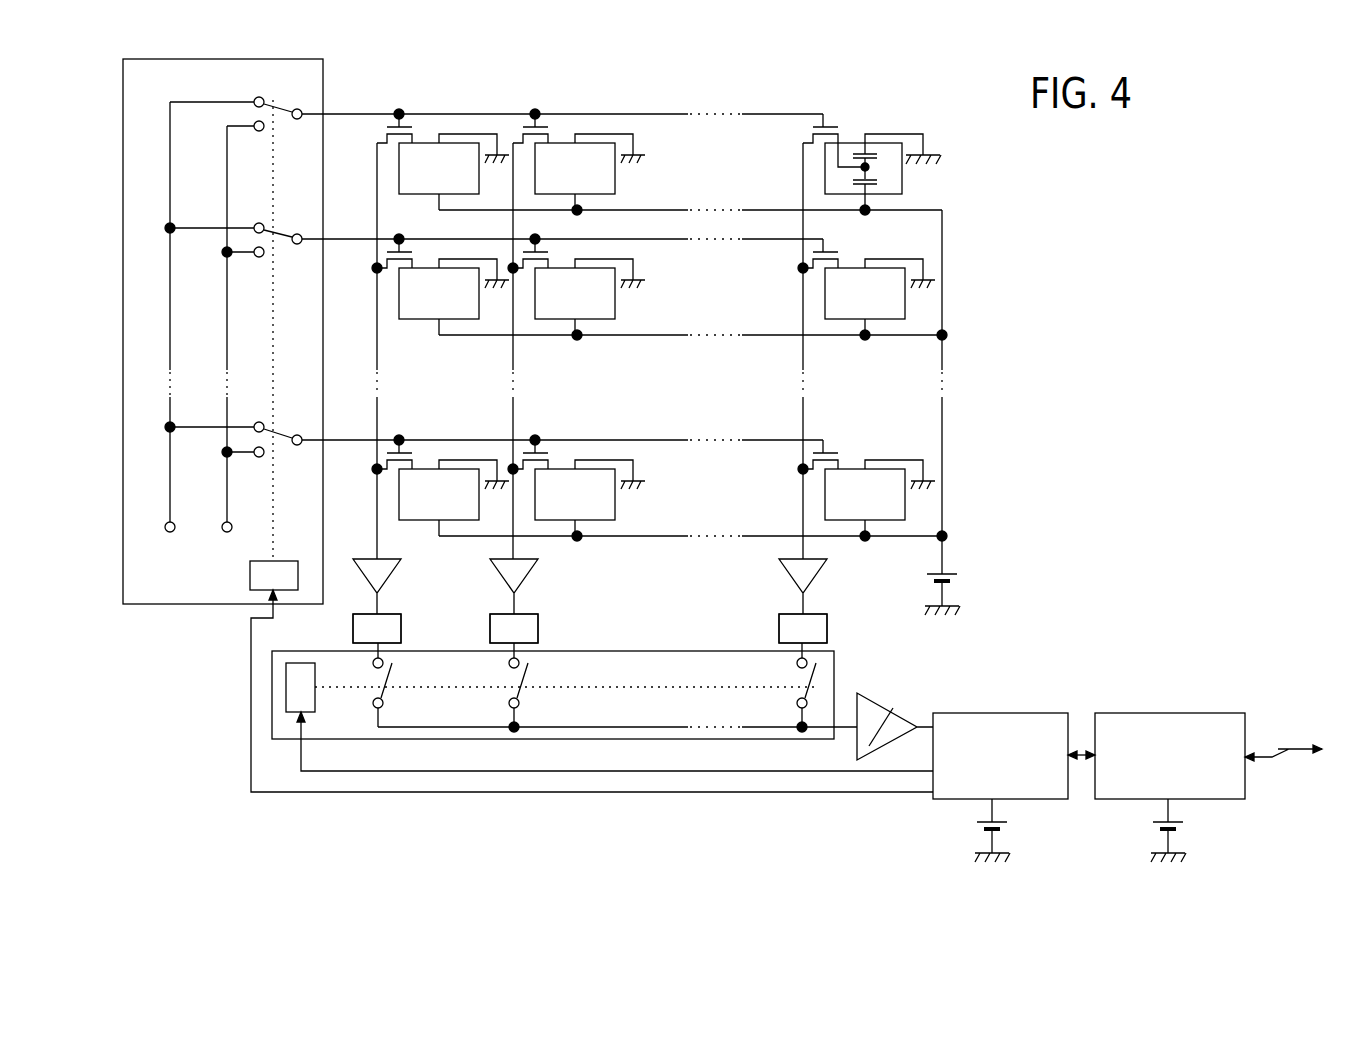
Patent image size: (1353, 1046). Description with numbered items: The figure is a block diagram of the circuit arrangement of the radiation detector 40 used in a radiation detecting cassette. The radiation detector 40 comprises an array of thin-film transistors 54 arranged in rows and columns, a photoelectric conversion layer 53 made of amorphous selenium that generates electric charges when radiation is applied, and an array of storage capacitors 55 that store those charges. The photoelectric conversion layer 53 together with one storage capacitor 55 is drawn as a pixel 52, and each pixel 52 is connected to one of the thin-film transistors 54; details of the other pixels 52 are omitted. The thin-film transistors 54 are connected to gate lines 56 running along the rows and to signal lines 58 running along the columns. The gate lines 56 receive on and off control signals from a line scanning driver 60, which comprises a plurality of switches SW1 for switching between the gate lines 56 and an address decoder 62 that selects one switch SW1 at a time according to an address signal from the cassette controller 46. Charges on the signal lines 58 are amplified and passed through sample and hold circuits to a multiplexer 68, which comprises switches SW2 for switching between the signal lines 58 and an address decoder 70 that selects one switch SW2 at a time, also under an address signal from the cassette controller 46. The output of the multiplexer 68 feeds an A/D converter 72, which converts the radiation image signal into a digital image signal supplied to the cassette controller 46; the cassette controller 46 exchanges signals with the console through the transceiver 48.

The radiation detector 40 is at (820, 83).
The cassette controller 46 is at (1045, 713).
The transceiver 48 is at (1215, 713).
The pixel 52 is at (854, 158).
The photoelectric conversion layer 53 is at (881, 181).
The thin-film transistor 54 is at (810, 129).
The storage capacitor 55 is at (879, 153).
The gate line 56 is at (770, 114).
The signal line 58 is at (803, 172).
The line scanning driver 60 is at (123, 95).
The address decoder 62 is at (250, 575).
The multiplexer 68 is at (587, 691).
The address decoder 70 is at (316, 702).
The A/D converter 72 is at (893, 712).
The switch SW1 is at (282, 102).
The switch SW2 is at (833, 682).